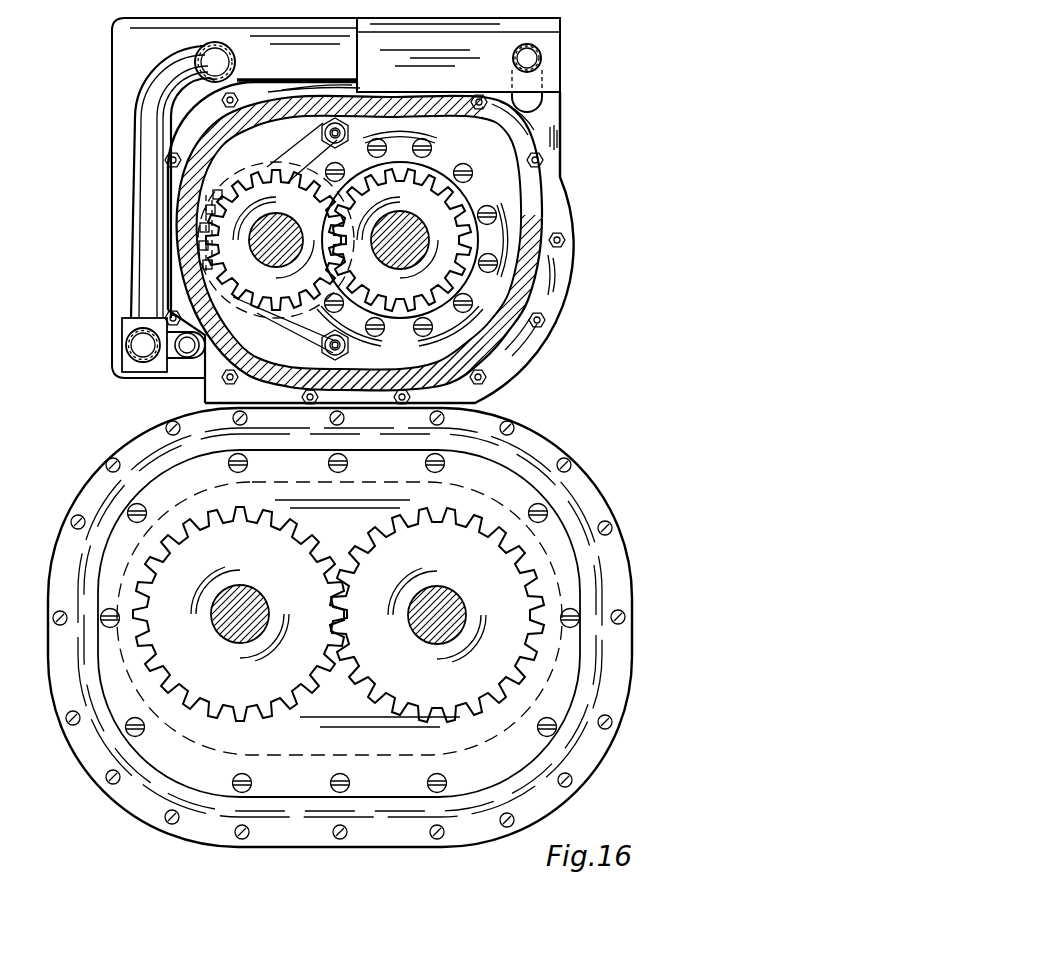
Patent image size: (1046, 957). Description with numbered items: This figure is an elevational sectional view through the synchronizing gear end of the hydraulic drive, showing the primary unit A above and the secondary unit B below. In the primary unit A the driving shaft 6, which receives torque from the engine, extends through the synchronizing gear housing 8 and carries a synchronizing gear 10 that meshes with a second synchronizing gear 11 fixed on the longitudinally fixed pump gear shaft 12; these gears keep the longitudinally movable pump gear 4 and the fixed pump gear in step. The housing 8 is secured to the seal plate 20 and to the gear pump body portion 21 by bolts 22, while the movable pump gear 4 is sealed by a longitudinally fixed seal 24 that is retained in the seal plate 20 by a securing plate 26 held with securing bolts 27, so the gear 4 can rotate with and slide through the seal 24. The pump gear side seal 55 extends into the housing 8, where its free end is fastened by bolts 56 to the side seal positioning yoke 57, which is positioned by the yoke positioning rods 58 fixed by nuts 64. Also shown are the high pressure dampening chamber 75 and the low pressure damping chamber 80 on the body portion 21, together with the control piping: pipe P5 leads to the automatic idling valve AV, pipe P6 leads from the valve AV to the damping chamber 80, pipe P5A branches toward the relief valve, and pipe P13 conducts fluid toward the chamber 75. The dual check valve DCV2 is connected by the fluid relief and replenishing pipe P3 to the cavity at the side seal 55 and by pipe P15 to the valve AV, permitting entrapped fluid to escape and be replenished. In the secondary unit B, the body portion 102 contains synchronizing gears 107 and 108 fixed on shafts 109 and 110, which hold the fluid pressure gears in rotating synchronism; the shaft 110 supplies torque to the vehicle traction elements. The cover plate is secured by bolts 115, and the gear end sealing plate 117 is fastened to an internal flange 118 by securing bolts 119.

The high pressure dampening chamber 75 is at (140, 73).
The automatic idling valve AV is at (552, 43).
The pipe P13 is at (545, 60).
The pipe P6 is at (540, 98).
The pipe P5A is at (197, 50).
The pipe P5 is at (137, 112).
The dual check valve DCV2 is at (121, 340).
The pipe P15 is at (135, 358).
The fluid relief and replenishing pipe P3 is at (187, 355).
The primary unit A is at (581, 266).
The gear pump body portion 21 is at (560, 137).
The low pressure damping chamber 80 is at (545, 118).
The synchronizing gear housing 8 is at (525, 199).
The securing plate 26 is at (488, 240).
The longitudinally fixed seal 24 is at (455, 290).
The longitudinally movable pump gear 4 is at (478, 272).
The seal plate 20 is at (557, 305).
The securing bolts 27 is at (490, 181).
The bolts 22 is at (566, 240).
The driving shaft 6 is at (420, 234).
The synchronizing gear 10 is at (388, 212).
The longitudinally fixed pump gear shaft 12 is at (298, 236).
The second synchronizing gear 11 is at (292, 204).
The side seal positioning yoke 57 is at (326, 157).
The nuts 64 is at (320, 134).
The yoke positioning rods 58 is at (347, 132).
The bolts 56 is at (188, 205).
The pump gear side seal 55 is at (190, 226).
The secondary unit B is at (606, 483).
The secondary unit body portion 102 is at (622, 536).
The internal flange 118 is at (603, 560).
The securing bolts 119 is at (588, 605).
The bolts 115 is at (568, 468).
The gear end sealing plate 117 is at (553, 527).
The synchronizing gear 107 is at (265, 567).
The shaft 109 is at (264, 605).
The synchronizing gear 108 is at (478, 567).
The shaft 110 is at (424, 595).